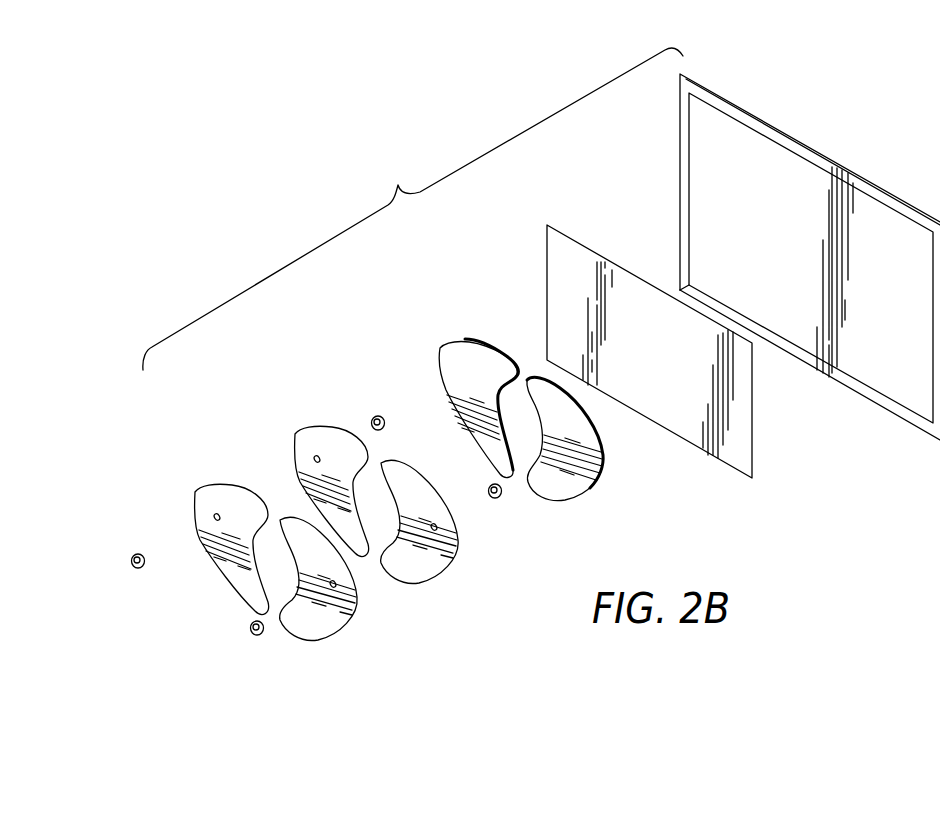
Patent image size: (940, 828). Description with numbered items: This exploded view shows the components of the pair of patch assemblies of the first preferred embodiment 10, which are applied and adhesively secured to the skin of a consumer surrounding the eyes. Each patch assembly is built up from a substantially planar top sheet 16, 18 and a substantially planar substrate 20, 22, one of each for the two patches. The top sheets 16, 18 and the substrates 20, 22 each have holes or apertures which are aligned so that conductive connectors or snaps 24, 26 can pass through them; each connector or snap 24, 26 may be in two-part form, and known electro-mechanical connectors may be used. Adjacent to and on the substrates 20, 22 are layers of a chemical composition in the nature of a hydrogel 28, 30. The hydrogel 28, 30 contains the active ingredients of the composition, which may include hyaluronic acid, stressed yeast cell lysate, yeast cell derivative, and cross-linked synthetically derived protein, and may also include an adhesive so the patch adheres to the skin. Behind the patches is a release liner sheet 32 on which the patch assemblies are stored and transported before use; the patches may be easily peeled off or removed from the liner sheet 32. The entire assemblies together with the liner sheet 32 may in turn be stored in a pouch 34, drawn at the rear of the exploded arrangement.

The first preferred embodiment 10 is at (413, 209).
The top sheet 16 is at (207, 507).
The top sheet 18 is at (308, 628).
The substrate 20 is at (305, 449).
The substrate 22 is at (408, 572).
The conductive connector or snap 24 is at (138, 569).
The conductive connector or snap 26 is at (258, 636).
The hydrogel 28 is at (453, 364).
The hydrogel 30 is at (550, 487).
The release liner sheet 32 is at (687, 415).
The pouch 34 is at (912, 392).